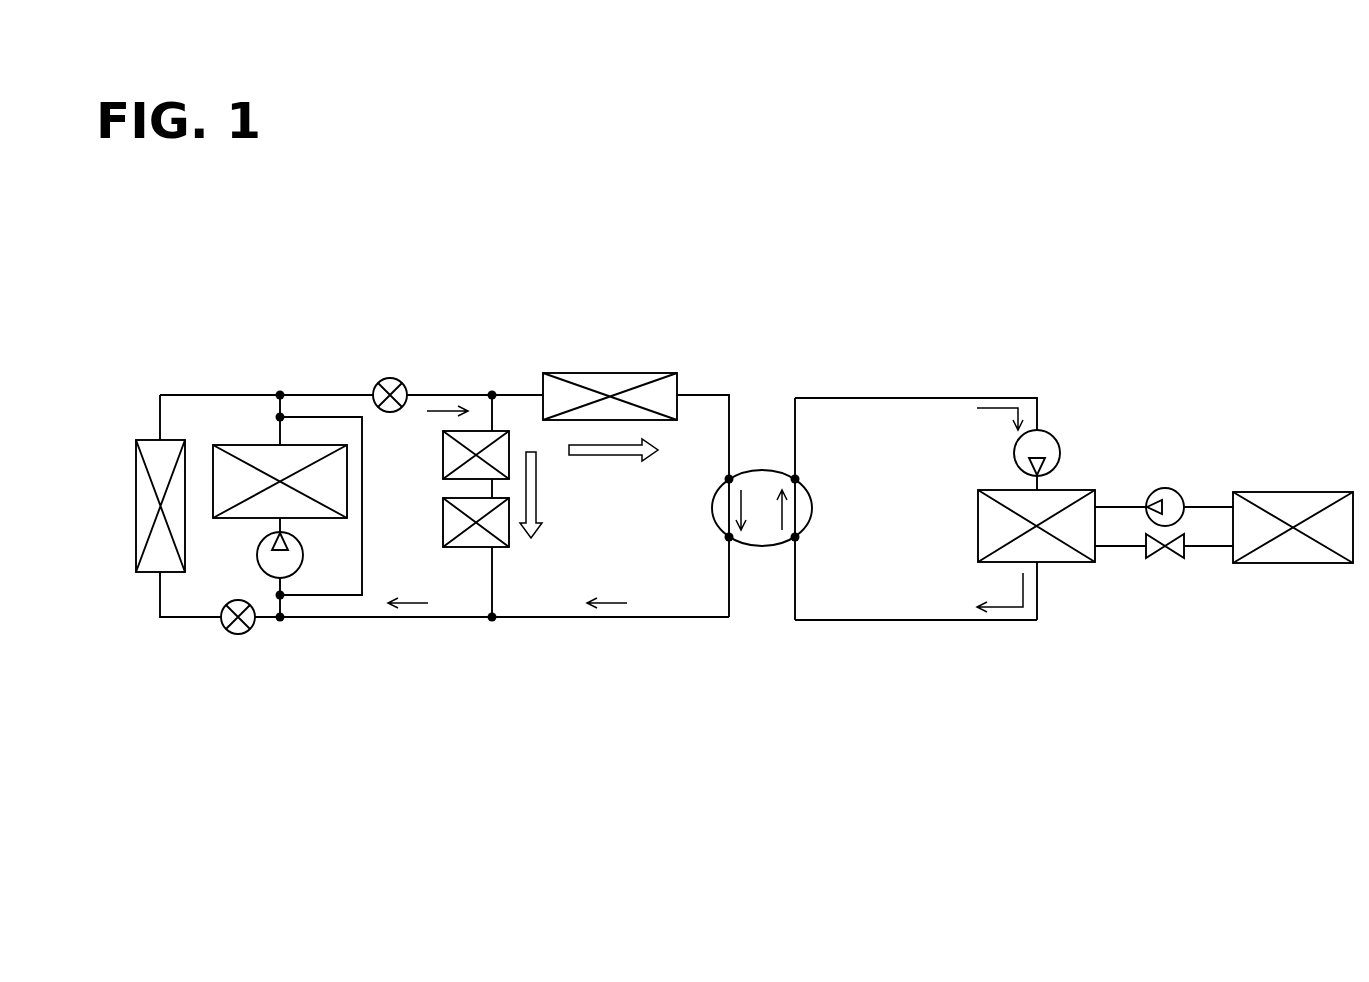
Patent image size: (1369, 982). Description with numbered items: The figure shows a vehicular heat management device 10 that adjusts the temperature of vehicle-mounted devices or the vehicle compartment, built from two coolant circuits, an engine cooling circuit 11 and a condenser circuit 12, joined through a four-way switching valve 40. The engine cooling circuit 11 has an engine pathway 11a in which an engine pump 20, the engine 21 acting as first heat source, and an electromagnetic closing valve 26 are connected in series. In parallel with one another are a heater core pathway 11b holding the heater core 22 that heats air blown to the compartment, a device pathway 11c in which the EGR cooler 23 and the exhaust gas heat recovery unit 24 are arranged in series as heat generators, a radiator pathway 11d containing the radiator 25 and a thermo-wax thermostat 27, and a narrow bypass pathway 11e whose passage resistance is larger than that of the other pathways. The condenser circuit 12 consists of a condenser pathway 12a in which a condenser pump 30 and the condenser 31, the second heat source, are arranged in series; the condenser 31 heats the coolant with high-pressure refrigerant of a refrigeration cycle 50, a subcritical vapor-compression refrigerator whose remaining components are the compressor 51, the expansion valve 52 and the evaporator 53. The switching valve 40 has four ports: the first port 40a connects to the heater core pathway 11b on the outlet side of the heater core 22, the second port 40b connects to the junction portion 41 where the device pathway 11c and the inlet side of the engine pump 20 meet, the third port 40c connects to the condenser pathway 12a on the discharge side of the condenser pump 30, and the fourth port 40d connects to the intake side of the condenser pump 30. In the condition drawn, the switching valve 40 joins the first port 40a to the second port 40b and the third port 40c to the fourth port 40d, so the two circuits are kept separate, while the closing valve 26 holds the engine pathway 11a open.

The vehicular heat management device 10 is at (810, 326).
The engine cooling circuit 11 is at (330, 393).
The engine pathway 11a is at (395, 619).
The heater core pathway 11b is at (705, 395).
The device pathway 11c is at (495, 570).
The radiator pathway 11d is at (187, 619).
The bypass pathway 11e is at (362, 570).
The condenser circuit 12 is at (920, 396).
The condenser pathway 12a is at (945, 622).
The engine pump 20 is at (257, 555).
The engine 21 is at (257, 444).
The heater core 22 is at (612, 372).
The EGR cooler 23 is at (443, 458).
The exhaust gas heat recovery unit 24 is at (443, 525).
The radiator 25 is at (136, 507).
The closing valve 26 is at (390, 377).
The thermostat 27 is at (247, 632).
The condenser pump 30 is at (1053, 432).
The condenser 31 is at (1075, 564).
The switching valve 40 is at (757, 470).
The first port 40a is at (729, 479).
The second port 40b is at (729, 537).
The third port 40c is at (795, 479).
The fourth port 40d is at (795, 537).
The junction portion 41 is at (490, 619).
The refrigeration cycle 50 is at (1208, 504).
The compressor 51 is at (1163, 488).
The expansion valve 52 is at (1165, 560).
The evaporator 53 is at (1290, 492).